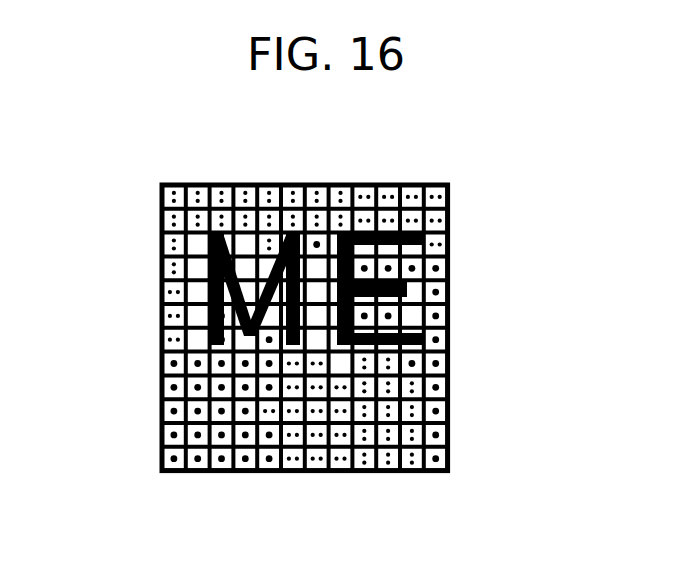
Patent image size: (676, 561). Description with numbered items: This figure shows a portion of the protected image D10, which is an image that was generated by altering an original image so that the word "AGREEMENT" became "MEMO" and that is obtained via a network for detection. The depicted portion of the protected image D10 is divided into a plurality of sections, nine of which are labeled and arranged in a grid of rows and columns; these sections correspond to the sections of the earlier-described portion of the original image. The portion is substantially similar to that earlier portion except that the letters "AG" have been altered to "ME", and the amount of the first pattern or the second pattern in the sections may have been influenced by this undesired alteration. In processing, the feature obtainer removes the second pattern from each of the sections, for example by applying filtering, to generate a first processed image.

The protected image D10 is at (500, 218).